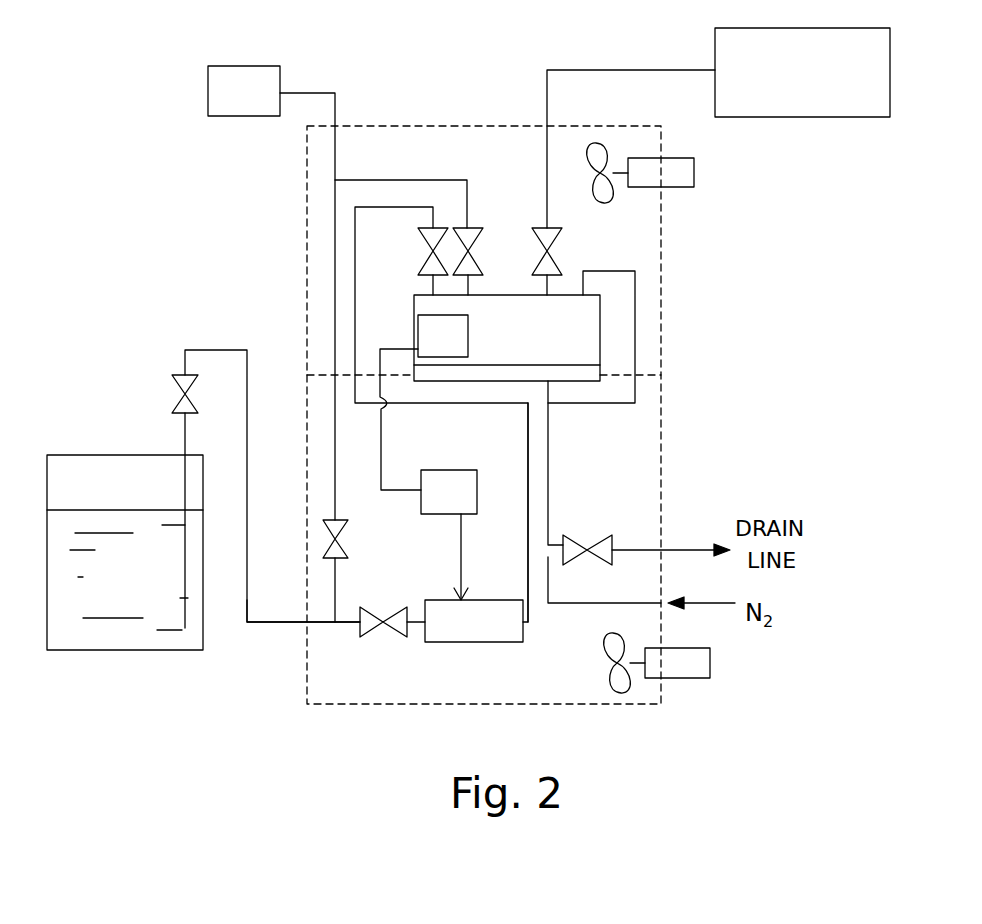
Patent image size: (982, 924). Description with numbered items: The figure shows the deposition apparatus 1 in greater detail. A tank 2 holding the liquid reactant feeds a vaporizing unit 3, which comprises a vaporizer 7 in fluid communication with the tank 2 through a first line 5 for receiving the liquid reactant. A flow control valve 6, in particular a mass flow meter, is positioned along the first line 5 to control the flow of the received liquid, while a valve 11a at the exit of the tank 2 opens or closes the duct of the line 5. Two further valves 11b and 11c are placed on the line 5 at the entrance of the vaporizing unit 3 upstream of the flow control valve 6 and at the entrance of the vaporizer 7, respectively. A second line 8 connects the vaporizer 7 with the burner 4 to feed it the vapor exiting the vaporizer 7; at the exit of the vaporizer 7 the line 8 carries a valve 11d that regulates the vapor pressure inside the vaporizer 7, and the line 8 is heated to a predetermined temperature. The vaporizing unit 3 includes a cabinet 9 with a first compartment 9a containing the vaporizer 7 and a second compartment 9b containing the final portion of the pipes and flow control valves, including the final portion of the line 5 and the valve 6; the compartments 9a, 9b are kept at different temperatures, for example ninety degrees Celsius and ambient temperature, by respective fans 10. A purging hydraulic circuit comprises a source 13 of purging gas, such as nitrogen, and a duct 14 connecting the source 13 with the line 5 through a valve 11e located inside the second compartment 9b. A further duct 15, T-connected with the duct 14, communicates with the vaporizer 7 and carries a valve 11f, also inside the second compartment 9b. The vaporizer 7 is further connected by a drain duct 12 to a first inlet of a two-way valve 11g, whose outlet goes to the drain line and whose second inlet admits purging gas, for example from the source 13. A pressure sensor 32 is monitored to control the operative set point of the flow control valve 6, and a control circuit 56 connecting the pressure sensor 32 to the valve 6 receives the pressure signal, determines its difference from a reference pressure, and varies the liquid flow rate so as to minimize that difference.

The deposition apparatus 1 is at (146, 80).
The tank 2 is at (112, 640).
The vaporizing unit 3 is at (455, 126).
The burner 4 is at (812, 117).
The first line 5 is at (300, 626).
The flow control valve 6 is at (473, 642).
The vaporizer 7 is at (520, 354).
The second line 8 is at (652, 69).
The cabinet 9 is at (661, 266).
The first compartment 9a is at (518, 168).
The second compartment 9b is at (574, 666).
The fan 10 is at (694, 168).
The valve 11a is at (178, 397).
The valve 11b is at (385, 632).
The valve 11c is at (433, 251).
The valve 11d is at (560, 251).
The valve 11e is at (348, 540).
The valve 11f is at (468, 251).
The two-way valve 11g is at (587, 550).
The drain duct 12 is at (635, 312).
The source of purging gas 13 is at (240, 116).
The duct 14 is at (335, 248).
The further duct 15 is at (422, 180).
The pressure sensor 32 is at (418, 322).
The control circuit 56 is at (442, 482).